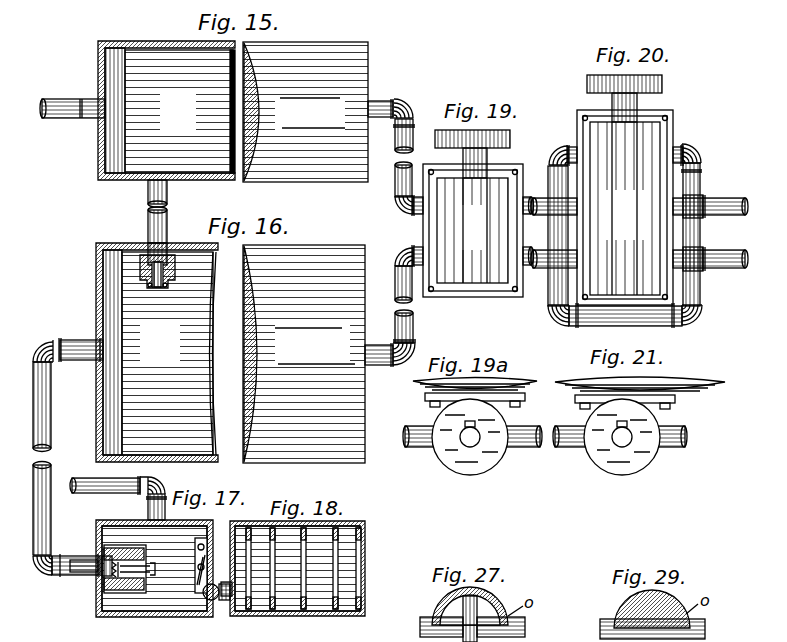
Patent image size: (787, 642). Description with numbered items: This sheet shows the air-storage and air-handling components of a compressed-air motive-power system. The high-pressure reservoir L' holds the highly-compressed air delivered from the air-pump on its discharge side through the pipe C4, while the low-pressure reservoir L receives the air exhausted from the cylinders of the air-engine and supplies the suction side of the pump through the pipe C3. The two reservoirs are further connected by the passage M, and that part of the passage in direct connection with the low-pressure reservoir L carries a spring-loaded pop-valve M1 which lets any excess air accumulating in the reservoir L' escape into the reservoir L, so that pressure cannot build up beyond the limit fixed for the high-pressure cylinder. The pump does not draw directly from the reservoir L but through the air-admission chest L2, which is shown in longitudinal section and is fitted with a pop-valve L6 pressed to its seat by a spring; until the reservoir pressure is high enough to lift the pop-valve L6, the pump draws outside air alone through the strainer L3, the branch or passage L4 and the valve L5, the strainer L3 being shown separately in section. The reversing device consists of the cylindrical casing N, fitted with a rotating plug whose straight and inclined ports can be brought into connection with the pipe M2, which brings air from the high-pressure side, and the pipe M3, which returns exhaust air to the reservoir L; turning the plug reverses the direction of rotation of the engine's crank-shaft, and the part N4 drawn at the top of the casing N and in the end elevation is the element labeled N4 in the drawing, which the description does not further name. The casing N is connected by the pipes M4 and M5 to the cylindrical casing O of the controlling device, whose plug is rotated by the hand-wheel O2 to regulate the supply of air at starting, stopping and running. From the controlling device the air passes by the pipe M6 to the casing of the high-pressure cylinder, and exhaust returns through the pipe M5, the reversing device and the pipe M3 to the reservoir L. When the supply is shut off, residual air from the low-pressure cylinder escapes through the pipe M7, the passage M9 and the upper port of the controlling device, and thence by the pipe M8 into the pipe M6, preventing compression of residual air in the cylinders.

In FIG. 15, the high-pressure reservoir L' is at (233, 111).
In FIG. 15, the pipe C4 is at (67, 119).
In FIG. 15, the passage M is at (147, 217).
In FIG. 16, the pop-valve M1 is at (146, 266).
In FIG. 15, the pipe M2 is at (399, 108).
In FIG. 16, the pipe M3 is at (414, 327).
In FIG. 16, the low-pressure reservoir L is at (230, 353).
In FIG. 16, the pipe C3 is at (48, 408).
In FIG. 17, the pipe C3 is at (70, 488).
In FIG. 17, the air-admission chest L2 is at (162, 617).
In FIG. 18, the strainer L3 is at (312, 617).
In FIG. 17, the passage L4 is at (228, 605).
In FIG. 17, the valve L5 is at (207, 590).
In FIG. 17, the pop-valve L6 is at (95, 580).
In FIG. 19, the cylindrical casing N is at (464, 232).
In FIG. 19, the cap of cylinder N N4 is at (503, 142).
In FIG. 19A, the cap of cylinder N N4 is at (495, 452).
In FIG. 20, the cylindrical casing O is at (625, 207).
In FIG. 20, the hand-wheel O2 is at (660, 91).
In FIG. 21, the hand-wheel O2 is at (645, 452).
In FIG. 20, the pipe M4 is at (540, 200).
In FIG. 20, the pipe M5 is at (543, 270).
In FIG. 20, the pipe M6 is at (735, 198).
In FIG. 20, the pipe M7 is at (735, 251).
In FIG. 20, the pipe M8 is at (700, 150).
In FIG. 20, the passage M9 is at (560, 170).